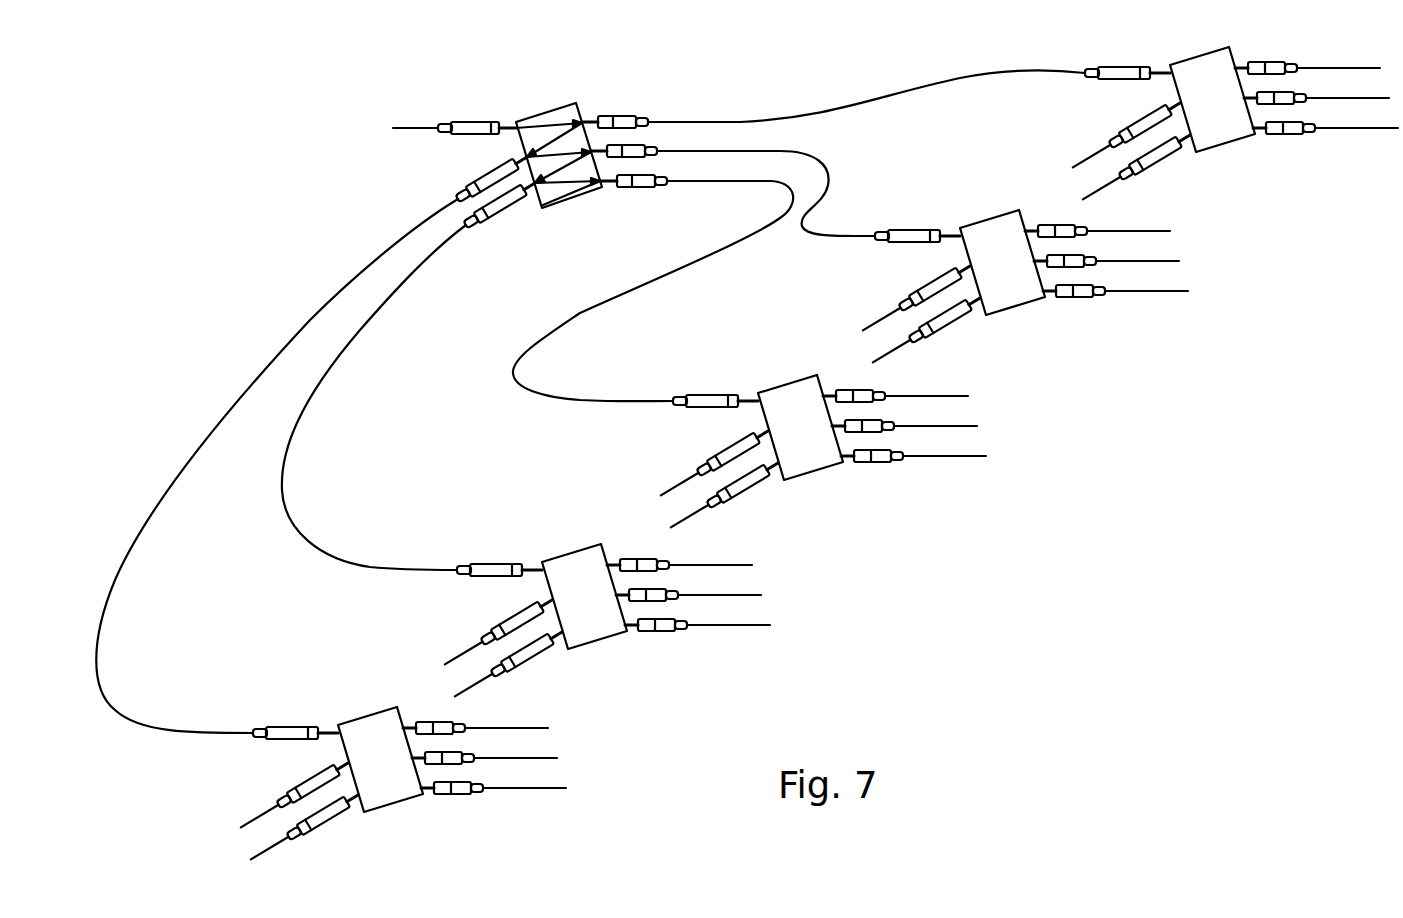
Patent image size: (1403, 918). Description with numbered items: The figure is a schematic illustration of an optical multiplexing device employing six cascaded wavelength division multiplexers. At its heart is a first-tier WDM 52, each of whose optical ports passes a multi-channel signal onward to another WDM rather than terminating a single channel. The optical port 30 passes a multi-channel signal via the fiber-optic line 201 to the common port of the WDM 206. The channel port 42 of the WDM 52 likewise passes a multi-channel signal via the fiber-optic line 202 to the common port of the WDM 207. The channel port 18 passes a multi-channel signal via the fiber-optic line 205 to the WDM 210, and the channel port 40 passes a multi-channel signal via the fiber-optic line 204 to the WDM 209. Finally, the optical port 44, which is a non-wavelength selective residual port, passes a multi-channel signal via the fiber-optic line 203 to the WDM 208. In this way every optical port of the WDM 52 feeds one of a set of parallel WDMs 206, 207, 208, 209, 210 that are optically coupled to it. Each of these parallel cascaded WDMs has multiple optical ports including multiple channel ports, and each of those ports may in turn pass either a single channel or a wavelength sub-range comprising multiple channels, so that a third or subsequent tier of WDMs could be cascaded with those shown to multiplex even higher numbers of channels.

The channel port 18 is at (584, 120).
The optical port 30 is at (523, 156).
The channel port 40 is at (593, 150).
The channel port 42 is at (559, 153).
The optical port 44 is at (601, 190).
The WDM 52 is at (548, 112).
The fiber-optic line 201 is at (388, 248).
The fiber-optic line 202 is at (395, 295).
The fiber-optic line 203 is at (630, 290).
The fiber-optic line 204 is at (798, 152).
The fiber-optic line 205 is at (814, 117).
The WDM 206 is at (383, 712).
The WDM 207 is at (586, 551).
The WDM 208 is at (801, 382).
The WDM 209 is at (1006, 216).
The WDM 210 is at (1207, 149).